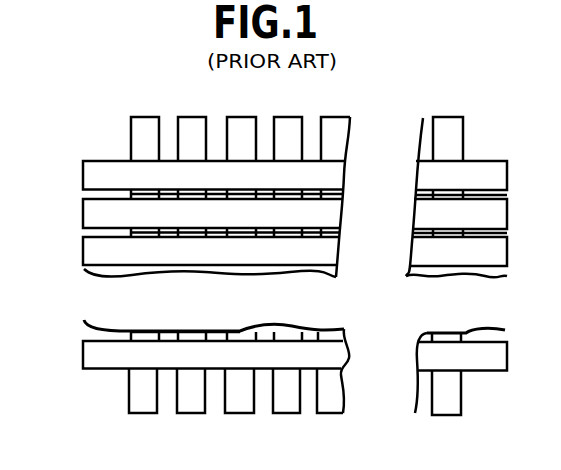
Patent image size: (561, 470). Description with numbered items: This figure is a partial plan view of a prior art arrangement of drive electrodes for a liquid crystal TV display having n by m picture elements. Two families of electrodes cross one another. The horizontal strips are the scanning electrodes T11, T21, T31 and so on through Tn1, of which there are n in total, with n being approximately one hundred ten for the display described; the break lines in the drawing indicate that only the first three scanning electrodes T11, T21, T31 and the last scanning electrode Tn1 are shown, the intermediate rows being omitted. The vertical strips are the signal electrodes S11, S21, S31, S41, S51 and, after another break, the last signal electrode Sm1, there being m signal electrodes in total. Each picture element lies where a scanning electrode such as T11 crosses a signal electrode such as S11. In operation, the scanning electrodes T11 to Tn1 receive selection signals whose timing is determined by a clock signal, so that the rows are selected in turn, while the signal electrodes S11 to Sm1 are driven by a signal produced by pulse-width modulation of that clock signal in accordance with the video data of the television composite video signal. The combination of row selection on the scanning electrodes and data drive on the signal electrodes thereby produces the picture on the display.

The signal electrode S11 is at (144, 250).
The signal electrode S21 is at (191, 250).
The signal electrode S31 is at (241, 250).
The signal electrode S41 is at (287, 250).
The signal electrode S51 is at (334, 250).
The signal electrode Sm1 is at (450, 251).
The scanning electrode T11 is at (274, 177).
The scanning electrode T21 is at (274, 215).
The scanning electrode T31 is at (274, 252).
The scanning electrode Tn1 is at (274, 356).